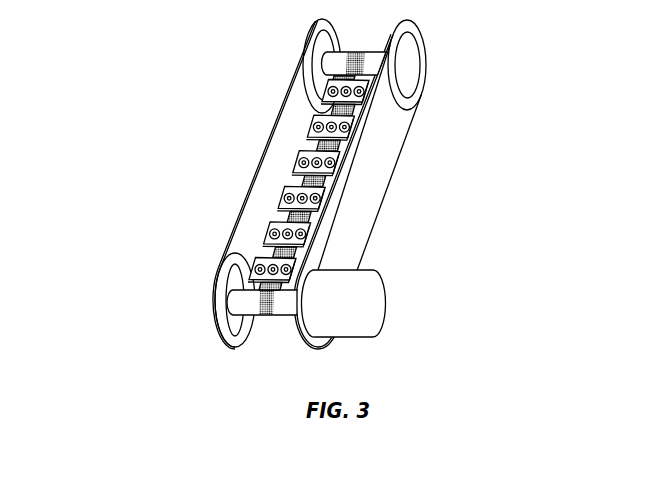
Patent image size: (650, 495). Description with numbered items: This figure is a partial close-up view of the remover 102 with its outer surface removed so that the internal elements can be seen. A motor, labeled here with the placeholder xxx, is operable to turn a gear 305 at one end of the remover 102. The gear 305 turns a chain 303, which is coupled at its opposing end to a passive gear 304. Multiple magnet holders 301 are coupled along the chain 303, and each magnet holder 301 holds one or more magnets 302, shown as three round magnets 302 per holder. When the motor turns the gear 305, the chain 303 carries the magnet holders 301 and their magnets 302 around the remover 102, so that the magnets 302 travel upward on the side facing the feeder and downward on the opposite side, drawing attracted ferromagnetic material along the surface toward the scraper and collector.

The remover 102 is at (138, 28).
The magnet holder 301 is at (313, 133).
The magnet 302 is at (318, 125).
The chain 303 is at (301, 181).
The passive gear 304 is at (329, 62).
The gear 305 is at (248, 302).
The motor xxx is at (375, 303).